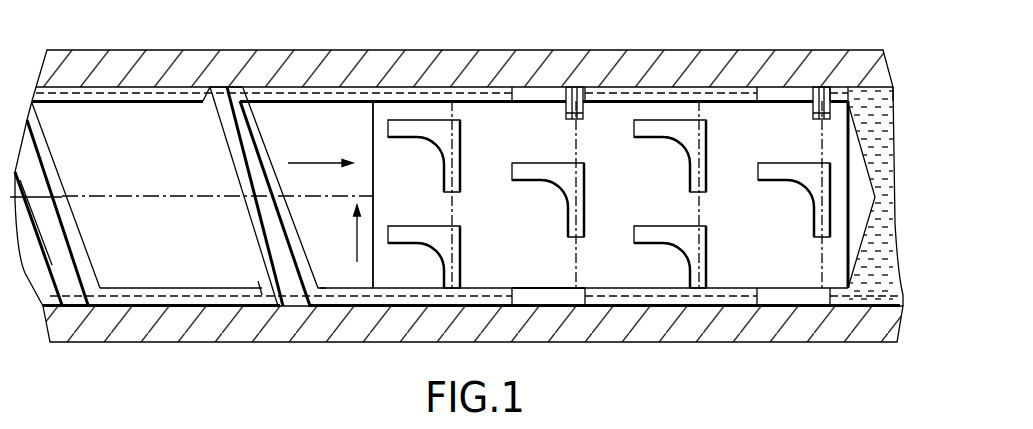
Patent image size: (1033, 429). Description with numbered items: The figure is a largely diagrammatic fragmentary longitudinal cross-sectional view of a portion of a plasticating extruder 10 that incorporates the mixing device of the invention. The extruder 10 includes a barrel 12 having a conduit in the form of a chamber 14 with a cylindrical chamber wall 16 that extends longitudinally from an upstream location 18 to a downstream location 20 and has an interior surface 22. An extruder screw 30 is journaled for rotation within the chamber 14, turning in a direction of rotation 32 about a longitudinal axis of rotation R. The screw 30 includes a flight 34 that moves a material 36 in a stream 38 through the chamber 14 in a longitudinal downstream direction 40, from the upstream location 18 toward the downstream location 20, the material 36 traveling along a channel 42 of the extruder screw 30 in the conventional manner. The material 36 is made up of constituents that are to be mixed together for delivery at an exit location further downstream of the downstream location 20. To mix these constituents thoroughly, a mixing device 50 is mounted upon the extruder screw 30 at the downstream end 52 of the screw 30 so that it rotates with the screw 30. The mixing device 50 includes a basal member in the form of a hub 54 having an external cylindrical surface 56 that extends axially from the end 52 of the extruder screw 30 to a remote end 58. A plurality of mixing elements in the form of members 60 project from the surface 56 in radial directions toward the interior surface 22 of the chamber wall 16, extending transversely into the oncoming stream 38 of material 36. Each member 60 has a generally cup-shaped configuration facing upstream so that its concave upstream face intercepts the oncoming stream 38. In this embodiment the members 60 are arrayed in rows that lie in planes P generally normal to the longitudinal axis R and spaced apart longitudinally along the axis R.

The plasticating extruder 10 is at (118, 350).
The barrel 12 is at (177, 337).
The chamber 14 is at (212, 301).
The cylindrical chamber wall 16 is at (143, 57).
The upstream location 18 is at (32, 98).
The downstream location 20 is at (891, 88).
The interior surface 22 is at (168, 88).
The extruder screw 30 is at (97, 124).
The direction of rotation 32 is at (357, 240).
The flight 34 is at (233, 95).
The material 36 is at (340, 97).
The stream 38 is at (450, 93).
The longitudinal downstream direction 40 is at (330, 163).
The channel 42 is at (258, 281).
The mixing device 50 is at (723, 289).
The downstream end 52 is at (377, 217).
The hub 54 is at (652, 281).
The external cylindrical surface 56 is at (758, 259).
The remote end 58 is at (882, 187).
The members 60 is at (538, 95).
The planes P is at (575, 130).
The longitudinal axis of rotation R is at (123, 198).